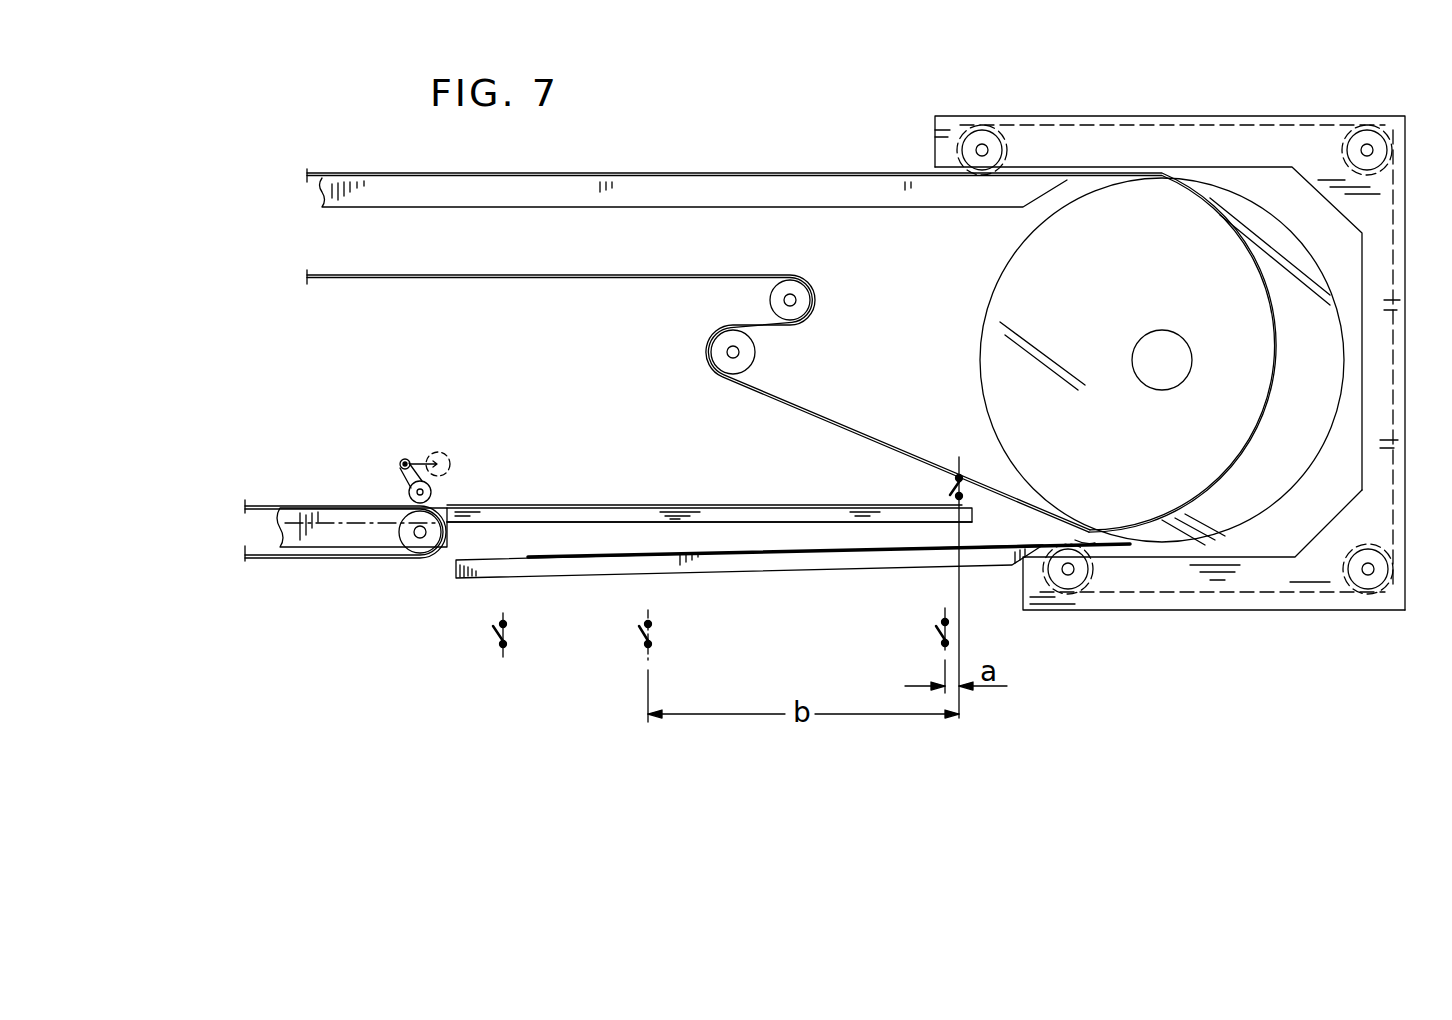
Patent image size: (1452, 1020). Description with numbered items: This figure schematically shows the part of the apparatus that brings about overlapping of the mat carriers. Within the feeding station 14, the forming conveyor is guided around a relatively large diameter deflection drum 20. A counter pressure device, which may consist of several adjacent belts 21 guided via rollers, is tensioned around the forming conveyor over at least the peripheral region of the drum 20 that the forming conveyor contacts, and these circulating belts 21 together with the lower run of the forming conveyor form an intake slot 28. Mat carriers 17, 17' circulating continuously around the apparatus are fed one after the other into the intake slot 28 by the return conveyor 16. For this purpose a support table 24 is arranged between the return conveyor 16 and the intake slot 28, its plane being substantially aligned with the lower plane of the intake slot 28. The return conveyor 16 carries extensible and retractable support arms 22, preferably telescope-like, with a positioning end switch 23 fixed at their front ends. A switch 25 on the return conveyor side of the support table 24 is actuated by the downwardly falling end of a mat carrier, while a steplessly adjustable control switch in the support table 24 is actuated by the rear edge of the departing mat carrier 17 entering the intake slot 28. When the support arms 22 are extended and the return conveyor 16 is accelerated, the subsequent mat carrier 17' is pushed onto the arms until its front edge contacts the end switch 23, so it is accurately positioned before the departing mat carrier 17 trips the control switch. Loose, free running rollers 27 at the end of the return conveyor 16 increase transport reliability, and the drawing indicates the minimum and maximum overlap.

The feeding station 14 is at (1250, 108).
The return conveyor 16 is at (327, 560).
The mat carrier 17 is at (829, 575).
The mat carrier 17' is at (709, 488).
The deflection drum 20 is at (1018, 275).
The belts 21 is at (1167, 595).
The support arms 22 is at (580, 518).
The positioning end switch 23 is at (950, 488).
The support table 24 is at (762, 573).
The switch 25 is at (492, 640).
The free running rollers 27 is at (408, 493).
The intake slot 28 is at (1085, 535).